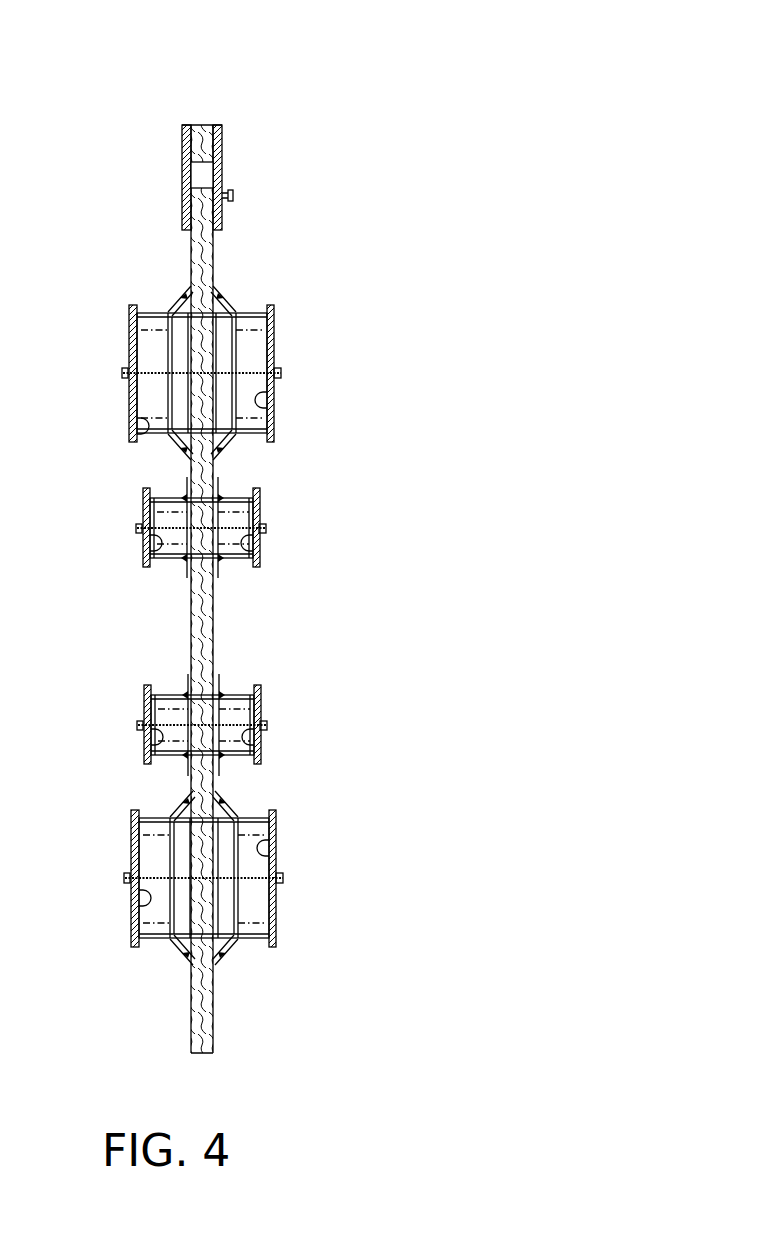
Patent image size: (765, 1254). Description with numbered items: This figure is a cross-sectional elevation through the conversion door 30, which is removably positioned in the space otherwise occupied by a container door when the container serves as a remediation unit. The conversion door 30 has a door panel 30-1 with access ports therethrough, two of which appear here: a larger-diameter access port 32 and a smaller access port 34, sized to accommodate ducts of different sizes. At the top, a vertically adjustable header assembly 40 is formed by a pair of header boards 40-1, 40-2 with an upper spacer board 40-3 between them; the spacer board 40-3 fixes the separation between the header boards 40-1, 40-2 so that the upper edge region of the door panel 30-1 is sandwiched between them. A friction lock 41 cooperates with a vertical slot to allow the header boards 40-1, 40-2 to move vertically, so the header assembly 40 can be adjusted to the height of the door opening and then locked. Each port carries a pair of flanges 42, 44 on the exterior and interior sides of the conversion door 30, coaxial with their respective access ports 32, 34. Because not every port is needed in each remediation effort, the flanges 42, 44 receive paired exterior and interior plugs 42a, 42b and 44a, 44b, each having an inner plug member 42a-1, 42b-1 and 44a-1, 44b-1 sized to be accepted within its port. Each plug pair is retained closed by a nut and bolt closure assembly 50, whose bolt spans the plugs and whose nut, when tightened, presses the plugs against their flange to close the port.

The conversion door 30 is at (385, 128).
The door panel 30-1 is at (213, 263).
The header assembly 40 is at (180, 121).
The header board 40-1 is at (182, 173).
The header board 40-2 is at (222, 152).
The upper spacer board 40-3 is at (198, 124).
The friction lock 41 is at (233, 195).
The access port 32 is at (199, 290).
The access port 34 is at (213, 466).
The flange 42 is at (199, 647).
The exterior plug 42a is at (128, 396).
The interior plug 42b is at (272, 332).
The inner plug member 42a-1 is at (133, 426).
The inner plug member 42b-1 is at (262, 401).
The flange 44 is at (202, 638).
The exterior plug 44a is at (143, 497).
The interior plug 44b is at (260, 498).
The inner plug member 44a-1 is at (147, 542).
The inner plug member 44b-1 is at (256, 542).
The nut and bolt closure assembly 50 is at (149, 367).